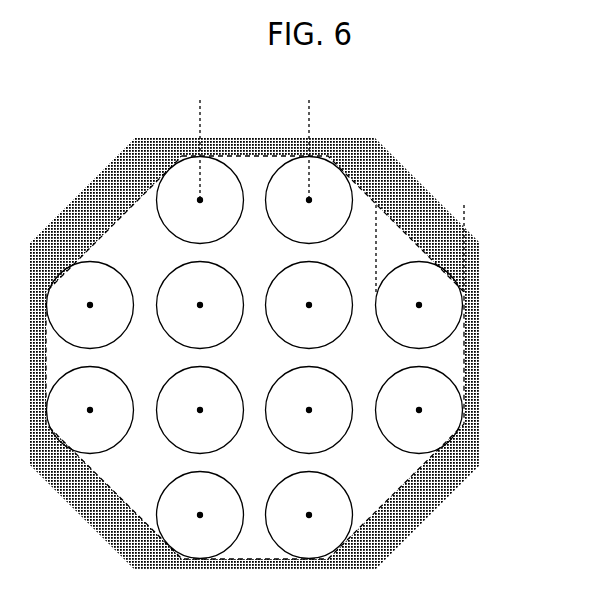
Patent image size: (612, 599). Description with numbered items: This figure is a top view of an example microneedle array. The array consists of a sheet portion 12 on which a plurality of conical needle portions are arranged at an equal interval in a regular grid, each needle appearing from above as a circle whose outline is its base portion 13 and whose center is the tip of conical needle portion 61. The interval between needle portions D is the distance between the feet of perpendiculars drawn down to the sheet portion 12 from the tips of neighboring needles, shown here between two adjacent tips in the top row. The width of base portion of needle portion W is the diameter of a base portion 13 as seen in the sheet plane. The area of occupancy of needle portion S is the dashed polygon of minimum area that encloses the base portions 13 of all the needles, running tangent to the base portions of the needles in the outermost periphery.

The sheet portion 12 is at (472, 356).
The base portion 13 is at (423, 336).
The tip of conical needle portion 61 is at (423, 302).
The area of occupancy of needle portion S is at (350, 453).
The interval between needle portions D is at (309, 117).
The width of base portion of needle portion W is at (464, 223).